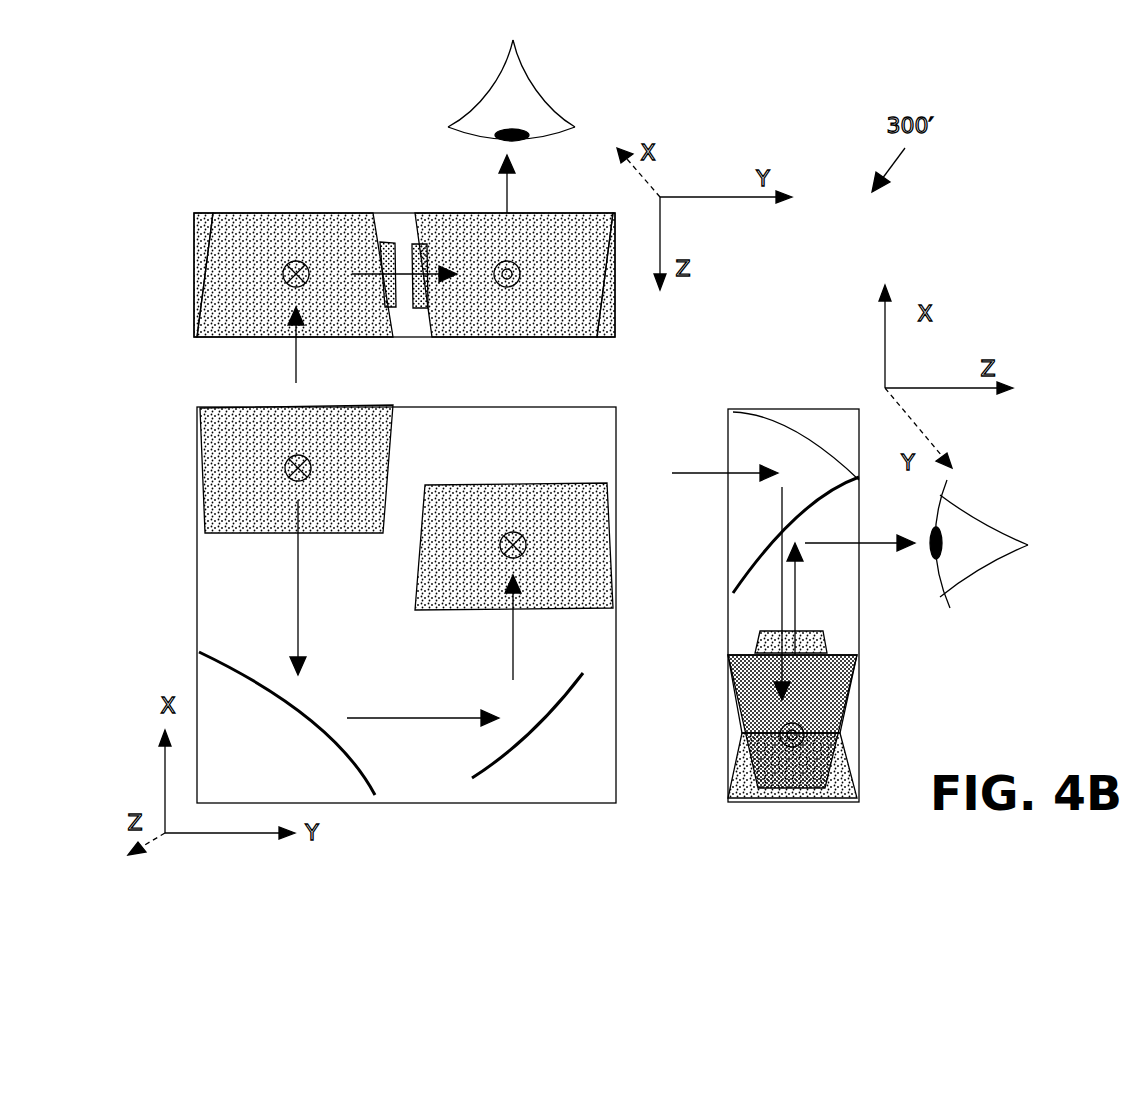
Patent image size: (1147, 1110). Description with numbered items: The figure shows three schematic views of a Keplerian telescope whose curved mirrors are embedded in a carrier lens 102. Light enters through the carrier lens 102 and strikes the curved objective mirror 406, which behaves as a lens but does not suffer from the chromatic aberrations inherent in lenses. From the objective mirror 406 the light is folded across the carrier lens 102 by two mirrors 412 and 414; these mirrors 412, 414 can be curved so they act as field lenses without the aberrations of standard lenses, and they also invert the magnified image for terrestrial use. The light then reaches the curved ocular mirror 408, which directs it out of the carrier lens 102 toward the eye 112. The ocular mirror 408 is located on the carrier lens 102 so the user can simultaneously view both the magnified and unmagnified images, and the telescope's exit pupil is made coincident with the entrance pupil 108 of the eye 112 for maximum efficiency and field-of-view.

The carrier lens 102 is at (391, 670).
The entrance pupil 108 is at (517, 142).
The eye 112 is at (496, 114).
The curved objective mirror 406 is at (315, 252).
The curved ocular mirror 408 is at (545, 255).
The mirror 412 is at (390, 240).
The mirror 414 is at (417, 308).